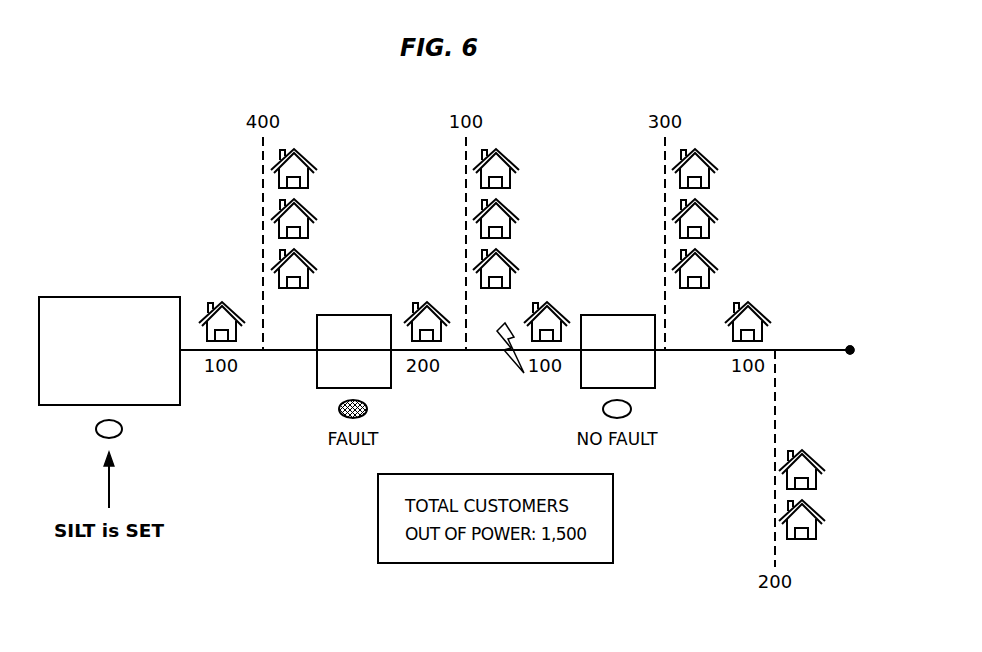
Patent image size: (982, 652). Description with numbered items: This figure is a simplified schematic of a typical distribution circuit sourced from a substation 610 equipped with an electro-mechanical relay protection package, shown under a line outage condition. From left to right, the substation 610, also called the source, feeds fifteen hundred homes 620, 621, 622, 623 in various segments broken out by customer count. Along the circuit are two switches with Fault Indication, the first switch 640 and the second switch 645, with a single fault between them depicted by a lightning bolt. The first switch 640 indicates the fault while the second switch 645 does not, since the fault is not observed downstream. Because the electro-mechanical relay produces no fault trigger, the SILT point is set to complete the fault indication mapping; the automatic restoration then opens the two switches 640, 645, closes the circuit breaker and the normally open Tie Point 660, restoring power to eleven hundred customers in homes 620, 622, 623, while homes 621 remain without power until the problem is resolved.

The substation 610 is at (118, 297).
The homes 620 is at (310, 178).
The homes 621 is at (512, 178).
The homes 622 is at (711, 178).
The homes 623 is at (733, 332).
The Switch 1 640 is at (317, 381).
The Switch 2 645 is at (655, 374).
The Tie Point 660 is at (850, 355).